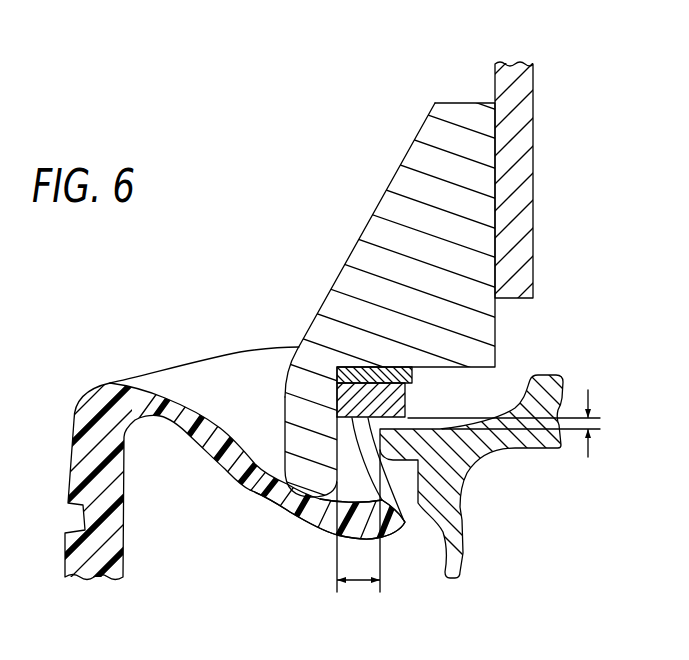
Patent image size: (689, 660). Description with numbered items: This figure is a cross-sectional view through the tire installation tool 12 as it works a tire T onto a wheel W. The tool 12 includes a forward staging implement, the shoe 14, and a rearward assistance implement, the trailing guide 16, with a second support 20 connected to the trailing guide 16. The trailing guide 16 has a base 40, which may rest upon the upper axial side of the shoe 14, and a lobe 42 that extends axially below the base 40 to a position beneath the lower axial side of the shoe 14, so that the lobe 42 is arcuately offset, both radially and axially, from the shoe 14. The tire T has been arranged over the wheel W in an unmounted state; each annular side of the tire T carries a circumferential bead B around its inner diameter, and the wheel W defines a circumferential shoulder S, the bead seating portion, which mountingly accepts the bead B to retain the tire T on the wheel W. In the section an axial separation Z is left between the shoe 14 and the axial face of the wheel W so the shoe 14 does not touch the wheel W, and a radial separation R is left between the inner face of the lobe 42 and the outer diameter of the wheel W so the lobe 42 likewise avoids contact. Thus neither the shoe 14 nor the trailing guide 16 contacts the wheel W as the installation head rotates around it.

The tire installation tool 12 is at (327, 133).
The shoe 14 is at (363, 400).
The trailing guide 16 is at (292, 342).
The second support 20 is at (532, 73).
The base 40 is at (489, 332).
The lobe 42 is at (307, 469).
The tire T is at (243, 488).
The bead B is at (303, 524).
The radial separation R is at (355, 582).
The shoulder S is at (404, 462).
The wheel W is at (548, 382).
The axial separation Z is at (588, 390).